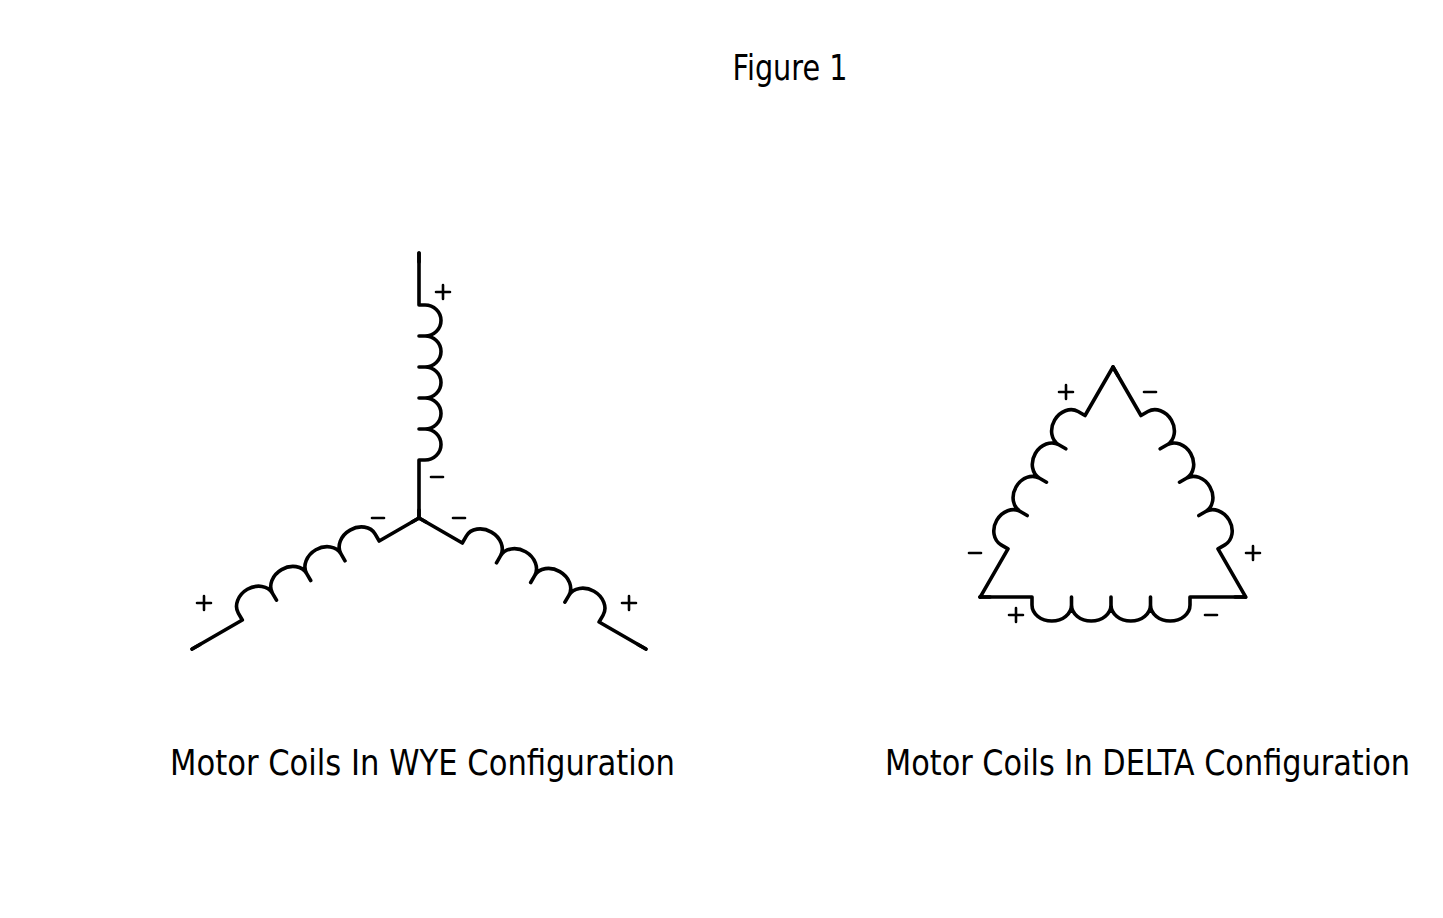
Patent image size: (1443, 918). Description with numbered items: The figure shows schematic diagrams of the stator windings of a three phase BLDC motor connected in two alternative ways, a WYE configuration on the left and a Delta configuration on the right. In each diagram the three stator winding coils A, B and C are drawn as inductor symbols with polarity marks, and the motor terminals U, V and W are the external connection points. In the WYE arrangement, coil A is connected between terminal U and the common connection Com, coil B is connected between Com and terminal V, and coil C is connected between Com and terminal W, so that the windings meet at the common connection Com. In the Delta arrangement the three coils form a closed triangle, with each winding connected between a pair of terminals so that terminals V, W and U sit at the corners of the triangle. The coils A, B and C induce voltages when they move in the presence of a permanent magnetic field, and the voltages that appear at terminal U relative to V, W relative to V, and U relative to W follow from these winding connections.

The stator winding coil A is at (832, 462).
The stator winding coil B is at (832, 508).
The stator winding coil C is at (652, 508).
The terminal U is at (699, 410).
The terminal V is at (878, 495).
The terminal W is at (719, 632).
The common connection Com is at (418, 547).